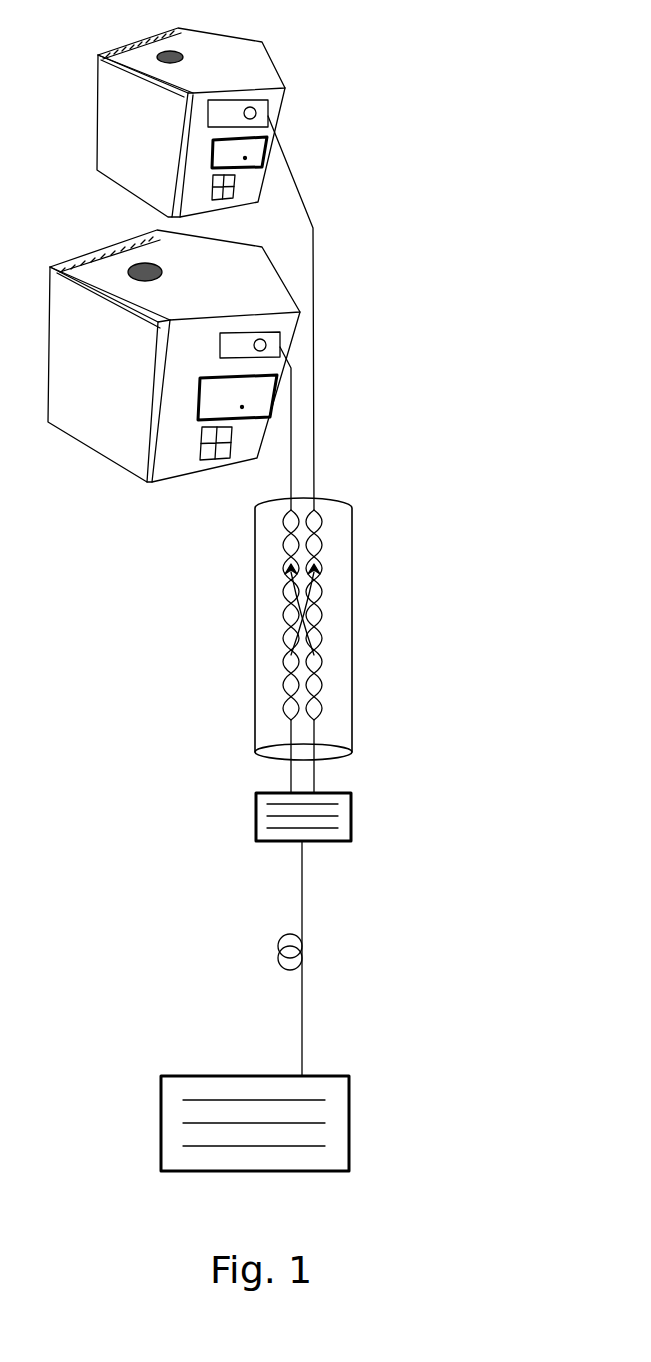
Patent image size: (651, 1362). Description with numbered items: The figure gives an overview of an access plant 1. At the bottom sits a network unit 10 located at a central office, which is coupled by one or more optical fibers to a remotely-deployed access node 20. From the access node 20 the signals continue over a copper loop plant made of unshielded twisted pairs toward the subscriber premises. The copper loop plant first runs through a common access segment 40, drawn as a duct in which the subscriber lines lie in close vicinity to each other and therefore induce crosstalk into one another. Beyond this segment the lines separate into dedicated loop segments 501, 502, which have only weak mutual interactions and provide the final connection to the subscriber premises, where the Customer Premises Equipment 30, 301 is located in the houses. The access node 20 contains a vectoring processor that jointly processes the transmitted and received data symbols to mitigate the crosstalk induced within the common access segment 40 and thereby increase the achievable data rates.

The access plant 1 is at (474, 423).
The network unit 10 is at (145, 1185).
The access node 20 is at (243, 860).
The Customer Premises Equipment 30 is at (208, 117).
The Customer Premises Equipment 301 is at (220, 347).
The common access segment 40 is at (378, 627).
The dedicated loop segment 501 is at (289, 490).
The dedicated loop segment 502 is at (342, 435).